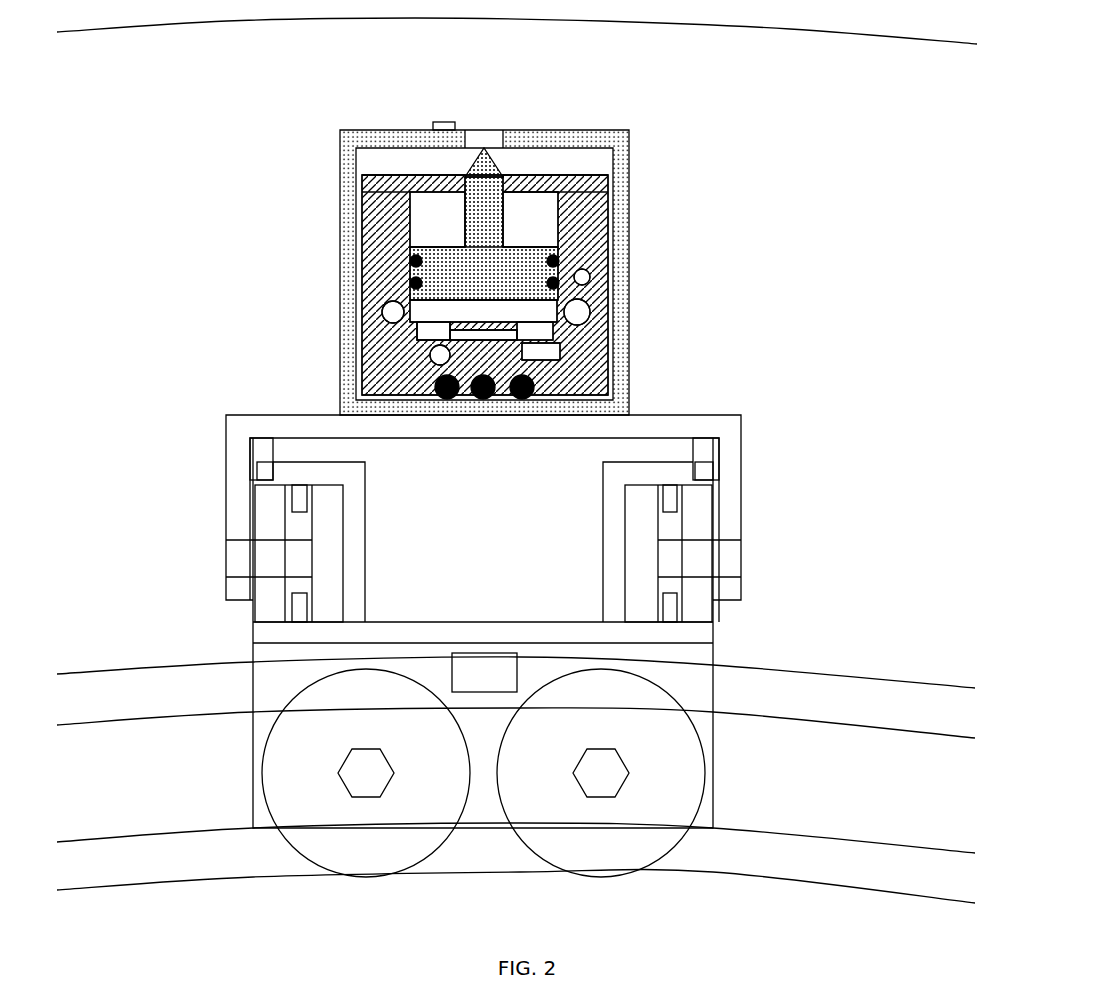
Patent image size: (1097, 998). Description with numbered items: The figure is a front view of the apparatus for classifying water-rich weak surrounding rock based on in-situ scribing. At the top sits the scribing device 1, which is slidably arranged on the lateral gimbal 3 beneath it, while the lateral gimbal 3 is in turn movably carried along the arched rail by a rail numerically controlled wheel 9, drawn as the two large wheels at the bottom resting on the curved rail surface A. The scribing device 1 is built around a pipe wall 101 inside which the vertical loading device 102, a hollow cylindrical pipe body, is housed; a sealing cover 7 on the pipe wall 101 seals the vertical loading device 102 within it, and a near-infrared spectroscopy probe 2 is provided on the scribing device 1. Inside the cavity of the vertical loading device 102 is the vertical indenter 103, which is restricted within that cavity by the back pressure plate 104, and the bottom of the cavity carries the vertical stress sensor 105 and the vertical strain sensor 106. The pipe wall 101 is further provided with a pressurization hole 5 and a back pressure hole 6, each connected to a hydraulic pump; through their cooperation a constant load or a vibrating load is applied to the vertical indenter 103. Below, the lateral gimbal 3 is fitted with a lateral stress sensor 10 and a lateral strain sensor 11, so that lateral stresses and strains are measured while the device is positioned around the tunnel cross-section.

The scribing device 1 is at (258, 330).
The pipe wall 101 is at (340, 143).
The vertical loading device 102 is at (372, 209).
The vertical indenter 103 is at (465, 225).
The back pressure plate 104 is at (362, 178).
The vertical stress sensor 105 is at (408, 322).
The vertical strain sensor 106 is at (437, 333).
The near-infrared spectroscopy probe 2 is at (452, 124).
The lateral gimbal 3 is at (700, 633).
The pressurization hole 5 is at (528, 368).
The back pressure hole 6 is at (590, 276).
The sealing cover 7 is at (486, 150).
The rail numerically controlled wheel 9 is at (647, 700).
The lateral stress sensor 10 is at (253, 457).
The lateral strain sensor 11 is at (465, 677).
The pipe surface A is at (833, 690).